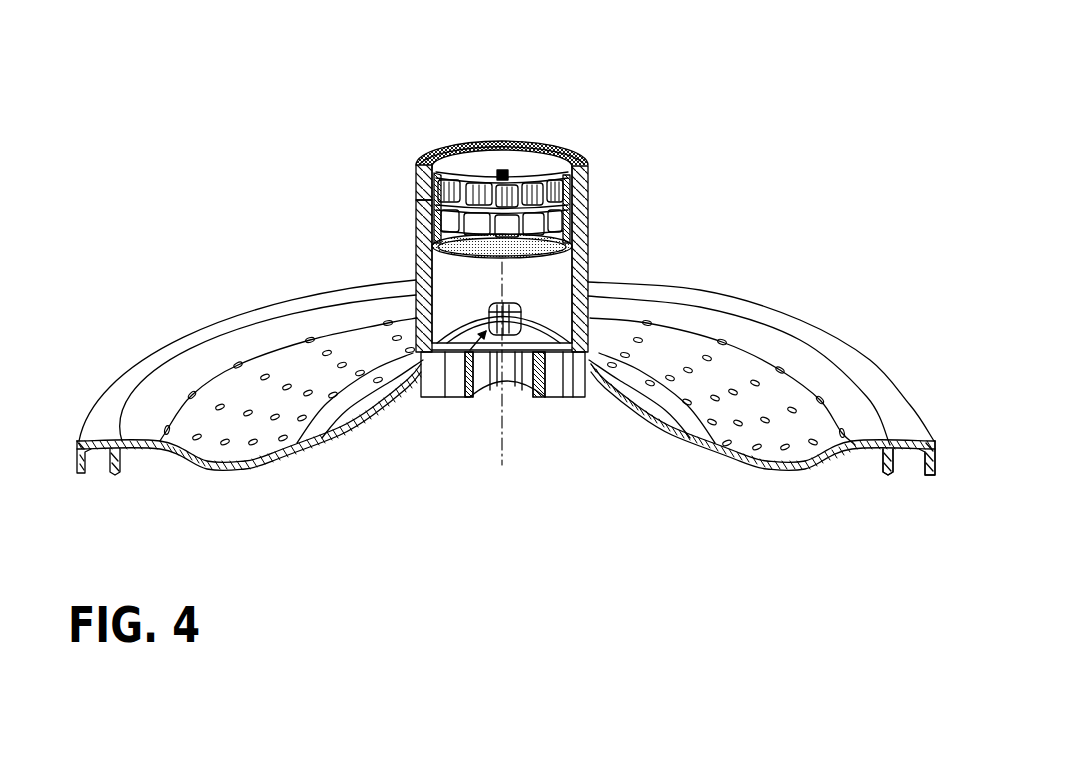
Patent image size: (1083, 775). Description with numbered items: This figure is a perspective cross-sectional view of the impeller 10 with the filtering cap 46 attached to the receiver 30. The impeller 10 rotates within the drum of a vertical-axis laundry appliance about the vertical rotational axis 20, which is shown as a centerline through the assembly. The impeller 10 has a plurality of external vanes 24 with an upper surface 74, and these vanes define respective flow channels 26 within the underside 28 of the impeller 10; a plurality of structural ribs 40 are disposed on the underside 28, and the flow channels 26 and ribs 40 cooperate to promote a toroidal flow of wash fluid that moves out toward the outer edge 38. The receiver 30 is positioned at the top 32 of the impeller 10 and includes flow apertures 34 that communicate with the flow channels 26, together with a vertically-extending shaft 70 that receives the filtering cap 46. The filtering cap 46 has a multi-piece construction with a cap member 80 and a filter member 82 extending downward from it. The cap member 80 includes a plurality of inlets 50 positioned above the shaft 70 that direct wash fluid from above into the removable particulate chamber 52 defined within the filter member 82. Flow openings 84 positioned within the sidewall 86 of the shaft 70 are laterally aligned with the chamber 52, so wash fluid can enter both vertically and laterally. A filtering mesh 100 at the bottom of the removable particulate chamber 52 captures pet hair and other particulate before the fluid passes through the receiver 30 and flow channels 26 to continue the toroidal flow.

The impeller 10 is at (278, 266).
The vertical rotational axis 20 is at (505, 430).
The external vanes 24 is at (595, 283).
The flow channels 26 is at (456, 340).
The underside 28 is at (705, 450).
The receiver 30 is at (592, 259).
The top 32 is at (417, 213).
The flow apertures 34 is at (558, 400).
The outer edge 38 is at (934, 455).
The structural ribs 40 is at (880, 463).
The filtering cap 46 is at (491, 126).
The inlets 50 is at (555, 147).
The removable particulate chamber 52 is at (417, 190).
The vertically-extending shaft 70 is at (417, 280).
The upper surface 74 is at (722, 373).
The cap member 80 is at (528, 160).
The filter member 82 is at (562, 222).
The flow openings 84 is at (500, 173).
The sidewall 86 is at (417, 237).
The filtering mesh 100 is at (475, 253).